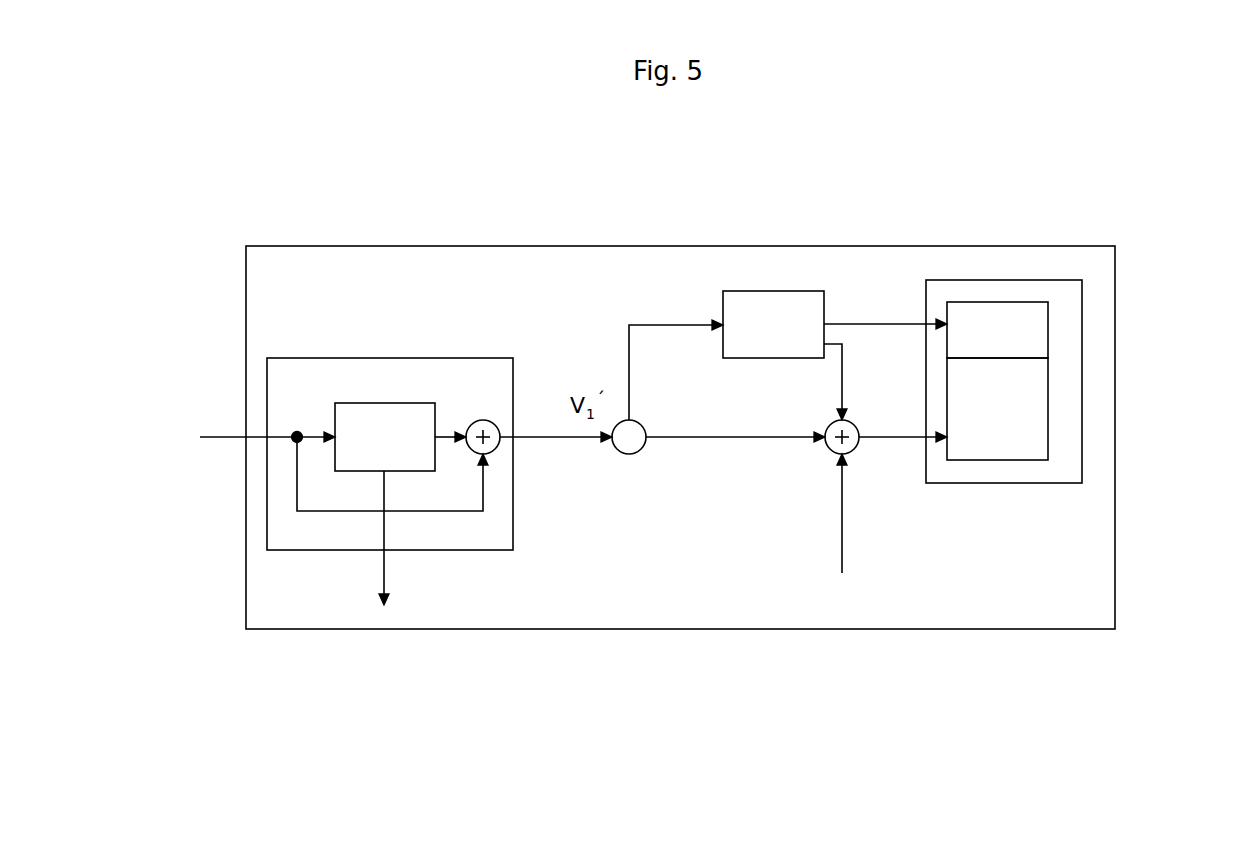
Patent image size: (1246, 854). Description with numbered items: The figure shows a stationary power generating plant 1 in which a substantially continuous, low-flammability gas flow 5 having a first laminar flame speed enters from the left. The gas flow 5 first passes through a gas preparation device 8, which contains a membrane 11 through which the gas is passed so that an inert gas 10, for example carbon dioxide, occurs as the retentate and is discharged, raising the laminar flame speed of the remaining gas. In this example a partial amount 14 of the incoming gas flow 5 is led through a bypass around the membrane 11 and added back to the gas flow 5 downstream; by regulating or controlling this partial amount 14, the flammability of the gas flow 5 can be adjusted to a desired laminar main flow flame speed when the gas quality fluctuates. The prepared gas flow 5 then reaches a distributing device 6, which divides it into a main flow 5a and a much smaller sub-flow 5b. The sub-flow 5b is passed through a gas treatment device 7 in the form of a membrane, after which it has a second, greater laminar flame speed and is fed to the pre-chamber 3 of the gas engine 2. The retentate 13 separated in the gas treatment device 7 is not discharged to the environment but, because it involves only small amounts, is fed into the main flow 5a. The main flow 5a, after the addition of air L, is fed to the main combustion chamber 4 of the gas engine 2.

The stationary power generating plant 1 is at (993, 245).
The gas engine 2 is at (1083, 320).
The pre-chamber 3 is at (997, 330).
The main combustion chamber 4 is at (997, 409).
The gas flow 5 is at (222, 435).
The main flow 5a is at (757, 437).
The sub-flow 5b is at (630, 358).
The distributing device 6 is at (630, 440).
The gas treatment device 7 is at (835, 320).
The gas preparation device 8 is at (418, 358).
The inert gas 10 is at (384, 572).
The membrane 11 is at (473, 437).
The retentate 13 is at (885, 399).
The partial amount 14 is at (436, 511).
The air L is at (842, 550).